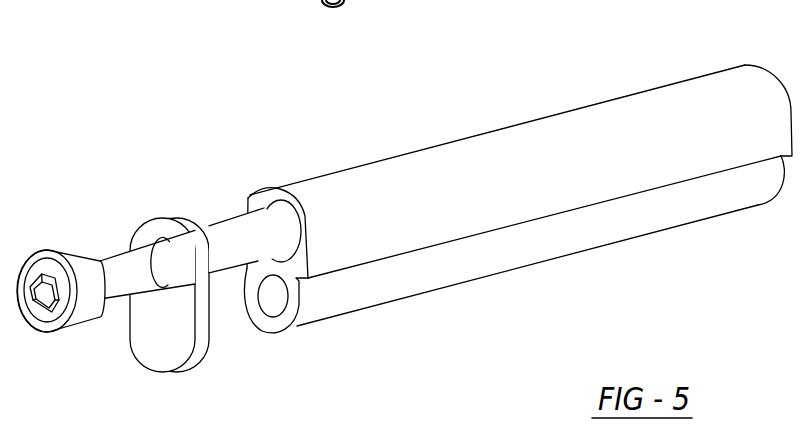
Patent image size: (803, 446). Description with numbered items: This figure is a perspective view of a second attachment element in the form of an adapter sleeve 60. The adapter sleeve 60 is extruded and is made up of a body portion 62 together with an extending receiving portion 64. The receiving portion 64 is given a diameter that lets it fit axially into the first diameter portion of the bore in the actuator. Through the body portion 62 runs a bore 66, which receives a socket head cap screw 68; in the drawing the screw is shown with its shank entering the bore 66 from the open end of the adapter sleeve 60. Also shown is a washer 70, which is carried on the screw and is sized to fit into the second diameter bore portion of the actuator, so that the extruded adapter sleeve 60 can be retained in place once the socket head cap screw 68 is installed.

The adapter sleeve 60 is at (512, 169).
The body portion 62 is at (598, 171).
The receiving portion 64 is at (563, 257).
The bore 66 is at (261, 205).
The socket head cap screw 68 is at (63, 250).
The washer 70 is at (206, 350).